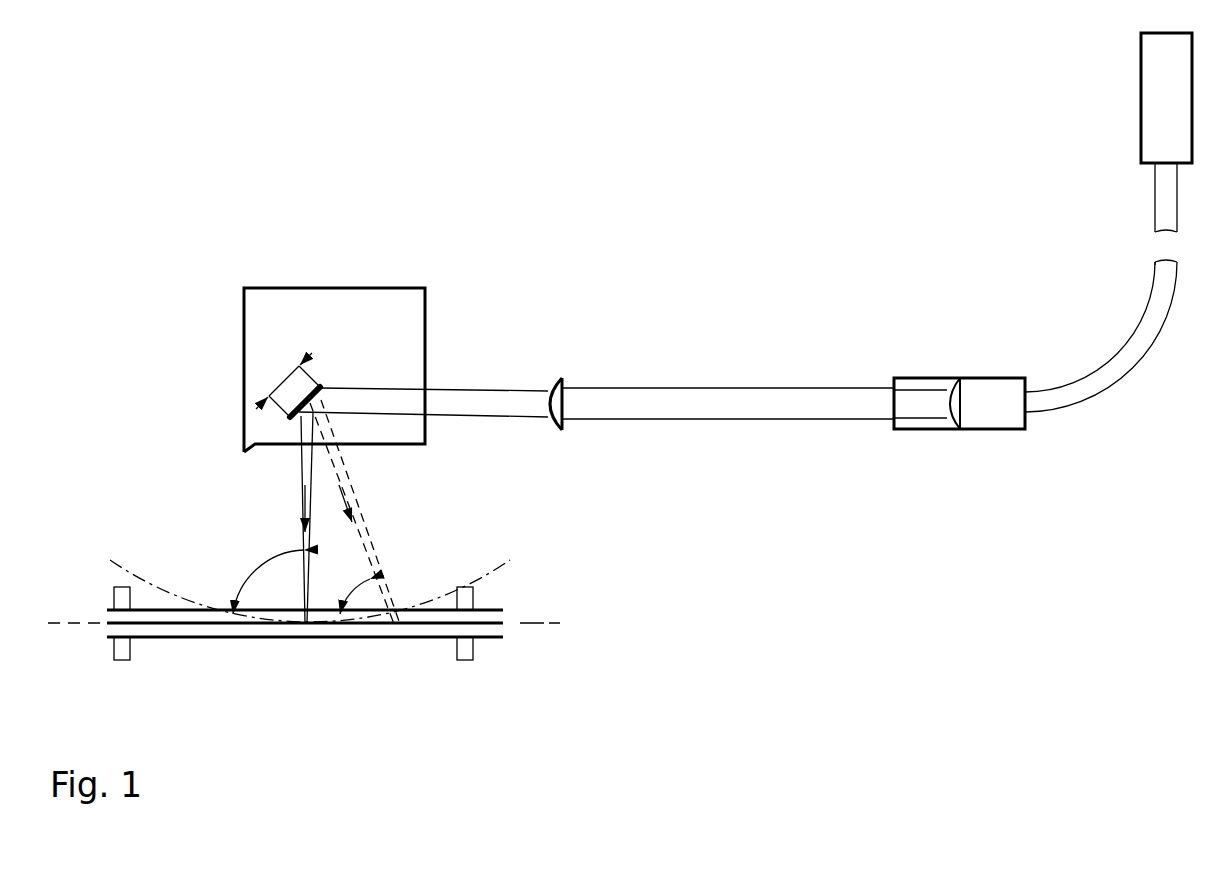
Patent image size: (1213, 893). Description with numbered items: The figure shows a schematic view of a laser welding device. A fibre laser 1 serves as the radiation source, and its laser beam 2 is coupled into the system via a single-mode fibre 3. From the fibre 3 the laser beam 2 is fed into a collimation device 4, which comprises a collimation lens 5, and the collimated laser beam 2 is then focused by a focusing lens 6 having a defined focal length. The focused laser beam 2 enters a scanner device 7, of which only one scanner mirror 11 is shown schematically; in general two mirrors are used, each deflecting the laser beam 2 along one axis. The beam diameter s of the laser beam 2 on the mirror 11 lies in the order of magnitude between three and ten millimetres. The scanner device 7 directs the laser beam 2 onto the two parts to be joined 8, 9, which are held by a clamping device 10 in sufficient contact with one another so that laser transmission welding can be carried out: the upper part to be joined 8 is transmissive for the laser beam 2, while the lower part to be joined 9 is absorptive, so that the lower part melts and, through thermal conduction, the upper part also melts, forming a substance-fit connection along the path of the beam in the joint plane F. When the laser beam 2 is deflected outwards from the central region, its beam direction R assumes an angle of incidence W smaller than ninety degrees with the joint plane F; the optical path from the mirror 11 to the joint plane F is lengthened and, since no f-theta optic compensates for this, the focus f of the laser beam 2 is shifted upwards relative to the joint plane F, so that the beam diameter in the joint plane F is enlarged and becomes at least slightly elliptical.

The fibre laser 1 is at (1148, 103).
The laser beam 2 is at (692, 386).
The single-mode fibre 3 is at (1120, 363).
The collimation device 4 is at (983, 376).
The collimation lens 5 is at (958, 378).
The focusing lens 6 is at (555, 378).
The scanner device 7 is at (363, 298).
The upper part to be joined 8 is at (418, 615).
The lower part to be joined 9 is at (493, 632).
The clamping device 10 is at (122, 657).
The scanner mirror 11 is at (291, 416).
The beam diameter s is at (288, 385).
The beam direction R is at (303, 497).
The angle of incidence W is at (310, 584).
The joint plane F is at (547, 623).
The focus f is at (306, 624).